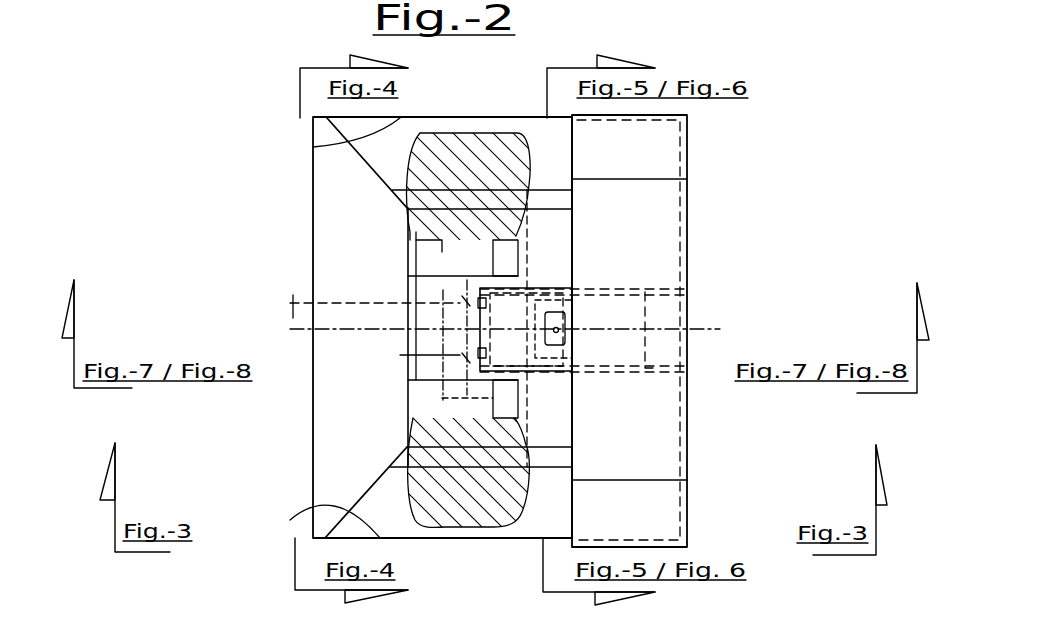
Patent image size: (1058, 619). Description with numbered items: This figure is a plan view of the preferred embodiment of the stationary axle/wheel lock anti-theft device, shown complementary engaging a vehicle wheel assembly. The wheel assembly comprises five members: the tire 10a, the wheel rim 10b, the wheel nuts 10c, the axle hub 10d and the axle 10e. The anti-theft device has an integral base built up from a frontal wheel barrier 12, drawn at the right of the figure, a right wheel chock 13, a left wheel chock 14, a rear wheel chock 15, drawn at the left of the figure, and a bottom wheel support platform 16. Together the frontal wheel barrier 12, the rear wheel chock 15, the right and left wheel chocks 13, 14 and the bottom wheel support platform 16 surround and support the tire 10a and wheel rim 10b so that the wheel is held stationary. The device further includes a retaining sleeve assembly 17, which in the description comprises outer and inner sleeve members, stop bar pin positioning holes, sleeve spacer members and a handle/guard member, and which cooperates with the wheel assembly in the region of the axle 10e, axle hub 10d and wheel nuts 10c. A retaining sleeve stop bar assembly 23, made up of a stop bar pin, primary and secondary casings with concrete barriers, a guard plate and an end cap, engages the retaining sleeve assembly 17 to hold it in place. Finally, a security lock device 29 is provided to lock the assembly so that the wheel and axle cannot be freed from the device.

The tire 10a is at (428, 186).
The wheel rim 10b is at (472, 278).
The wheel nuts 10c is at (477, 345).
The axle hub 10d is at (509, 348).
The axle 10e is at (330, 303).
The frontal wheel barrier 12 is at (687, 135).
The right wheel chock 13 is at (293, 517).
The left wheel chock 14 is at (313, 147).
The rear wheel chock 15 is at (313, 265).
The bottom wheel support platform 16 is at (550, 415).
The retaining sleeve assembly 17 is at (623, 292).
The retaining sleeve stop bar assembly 23 is at (556, 298).
The security lock device 29 is at (560, 324).